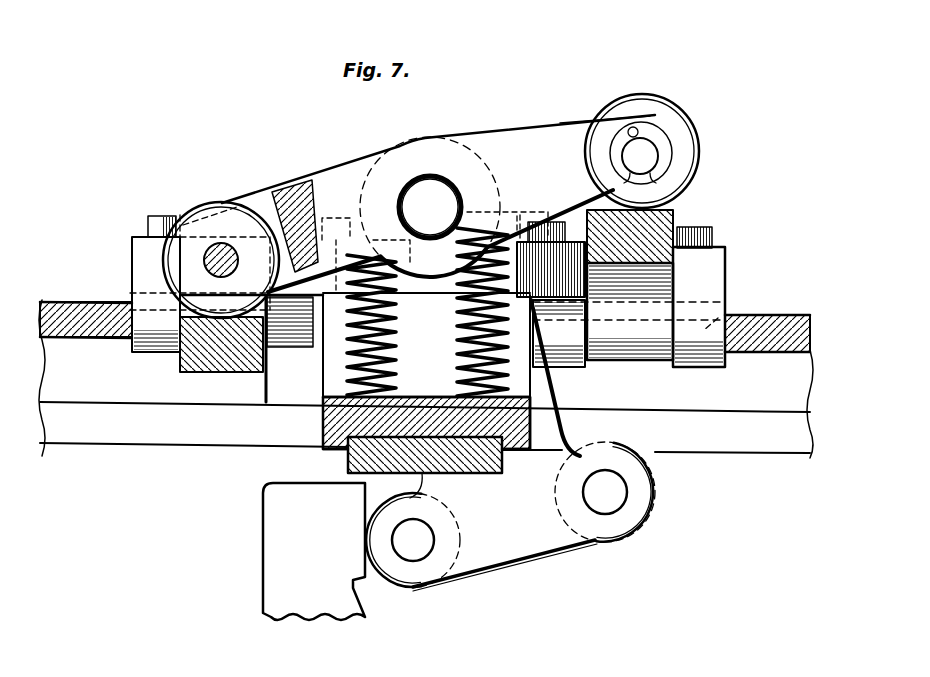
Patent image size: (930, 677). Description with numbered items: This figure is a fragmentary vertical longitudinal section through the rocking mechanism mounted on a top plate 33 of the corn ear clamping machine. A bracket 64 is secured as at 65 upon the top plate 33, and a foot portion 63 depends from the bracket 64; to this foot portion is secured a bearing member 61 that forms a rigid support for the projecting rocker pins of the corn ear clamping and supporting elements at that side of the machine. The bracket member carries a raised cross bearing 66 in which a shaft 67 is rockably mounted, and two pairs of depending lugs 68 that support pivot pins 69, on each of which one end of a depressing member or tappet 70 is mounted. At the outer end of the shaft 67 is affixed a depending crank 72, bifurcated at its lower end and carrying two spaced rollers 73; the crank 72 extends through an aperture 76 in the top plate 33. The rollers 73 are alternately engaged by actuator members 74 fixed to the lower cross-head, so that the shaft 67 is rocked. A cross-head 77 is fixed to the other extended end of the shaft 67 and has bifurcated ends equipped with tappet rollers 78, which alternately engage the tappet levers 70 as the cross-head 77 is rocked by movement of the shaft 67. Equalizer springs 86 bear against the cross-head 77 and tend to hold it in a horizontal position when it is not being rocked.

The top plate 33 is at (777, 350).
The bearing member 61 is at (503, 480).
The foot portion 63 is at (548, 427).
The bracket 64 is at (727, 262).
The securing means 65 is at (160, 216).
The raised cross bearing 66 is at (430, 122).
The shaft 67 is at (445, 198).
The depending lugs 68 is at (142, 355).
The pivot pin 69 is at (122, 350).
The depressing member or tappet 70 is at (233, 360).
The depending crank 72 is at (503, 532).
The rollers 73 is at (655, 497).
The actuator member 74 is at (314, 551).
The aperture 76 is at (283, 386).
The cross-head 77 is at (555, 130).
The tappet rollers 78 is at (223, 202).
The equalizer springs 86 is at (462, 340).